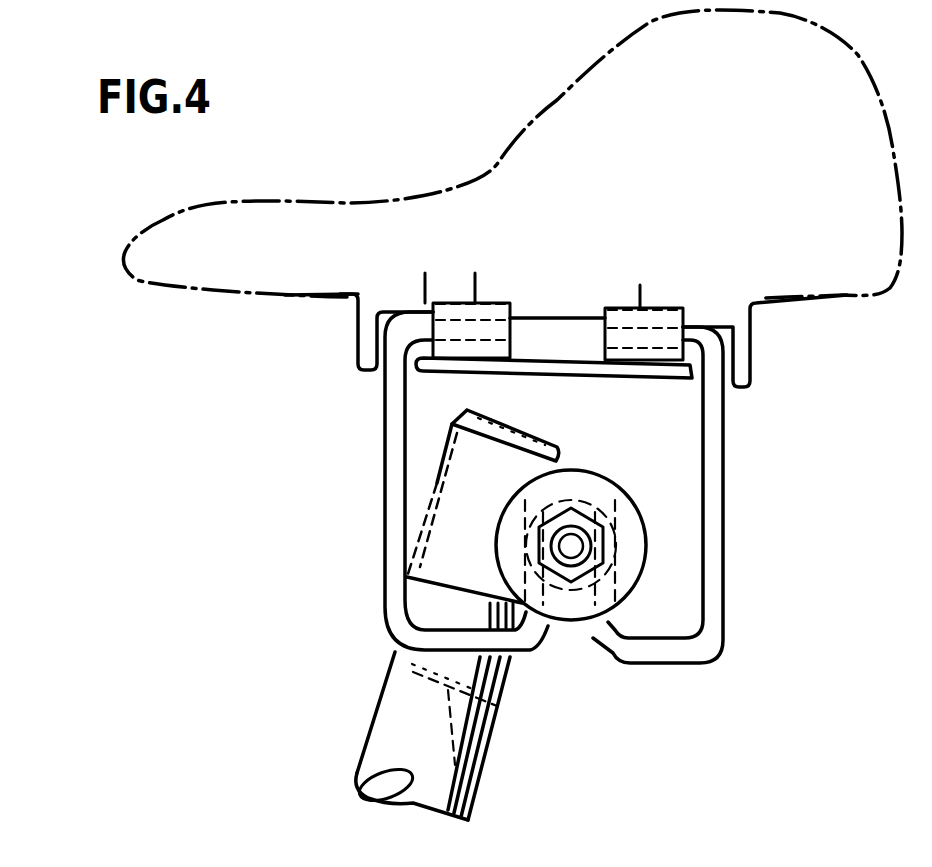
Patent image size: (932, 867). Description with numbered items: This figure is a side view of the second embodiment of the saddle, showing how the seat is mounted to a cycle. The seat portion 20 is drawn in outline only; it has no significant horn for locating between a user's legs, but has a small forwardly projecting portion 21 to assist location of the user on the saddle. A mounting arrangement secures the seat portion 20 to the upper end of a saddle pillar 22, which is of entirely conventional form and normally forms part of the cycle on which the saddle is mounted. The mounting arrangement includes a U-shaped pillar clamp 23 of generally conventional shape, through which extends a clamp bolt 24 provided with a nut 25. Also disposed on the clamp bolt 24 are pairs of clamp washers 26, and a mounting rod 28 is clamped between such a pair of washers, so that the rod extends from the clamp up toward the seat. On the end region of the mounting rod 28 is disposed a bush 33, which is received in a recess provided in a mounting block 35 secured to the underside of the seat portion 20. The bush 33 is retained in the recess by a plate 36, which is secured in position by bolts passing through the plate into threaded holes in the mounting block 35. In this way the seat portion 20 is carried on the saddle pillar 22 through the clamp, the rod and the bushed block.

The seat portion 20 is at (510, 140).
The forwardly projecting portion 21 is at (193, 228).
The saddle pillar 22 is at (398, 710).
The pillar clamp 23 is at (450, 517).
The clamp bolt 24 is at (575, 548).
The nut 25 is at (579, 583).
The clamp washers 26 is at (612, 496).
The mounting rod 28 is at (723, 543).
The bush 33 is at (602, 305).
The mounting block 35 is at (750, 338).
The plate 36 is at (623, 378).